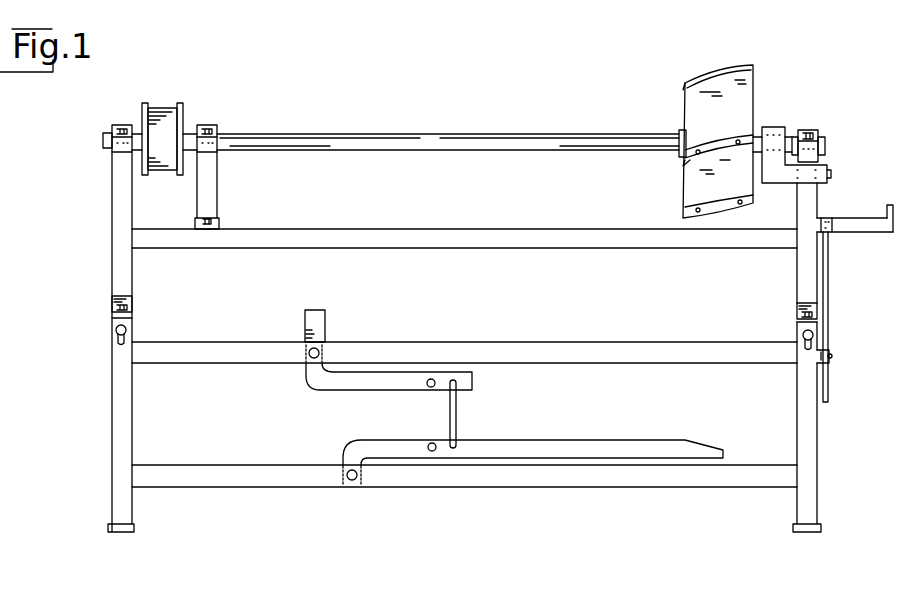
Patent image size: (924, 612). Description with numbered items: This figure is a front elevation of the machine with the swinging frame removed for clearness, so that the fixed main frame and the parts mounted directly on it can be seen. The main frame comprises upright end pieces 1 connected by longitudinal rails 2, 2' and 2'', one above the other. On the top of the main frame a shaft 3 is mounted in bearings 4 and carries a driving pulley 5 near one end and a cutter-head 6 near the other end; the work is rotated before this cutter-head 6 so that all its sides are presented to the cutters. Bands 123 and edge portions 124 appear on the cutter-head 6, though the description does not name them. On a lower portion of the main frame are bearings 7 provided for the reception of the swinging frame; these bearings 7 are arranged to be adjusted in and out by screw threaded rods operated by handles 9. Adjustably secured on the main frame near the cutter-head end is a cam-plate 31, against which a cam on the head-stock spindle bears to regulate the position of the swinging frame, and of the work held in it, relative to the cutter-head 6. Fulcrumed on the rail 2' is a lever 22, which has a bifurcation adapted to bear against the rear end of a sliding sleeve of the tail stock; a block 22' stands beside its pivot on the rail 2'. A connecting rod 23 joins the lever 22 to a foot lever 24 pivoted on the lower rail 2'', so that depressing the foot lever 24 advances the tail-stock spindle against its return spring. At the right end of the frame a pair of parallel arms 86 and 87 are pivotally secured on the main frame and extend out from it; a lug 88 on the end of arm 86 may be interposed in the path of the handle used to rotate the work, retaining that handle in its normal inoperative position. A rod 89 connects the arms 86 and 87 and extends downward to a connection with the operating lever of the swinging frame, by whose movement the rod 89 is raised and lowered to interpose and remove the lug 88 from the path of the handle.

The upright end pieces 1 is at (108, 222).
The longitudinal rail 2 is at (464, 221).
The longitudinal rail 2' is at (464, 334).
The longitudinal rail 2'' is at (464, 462).
The shaft 3 is at (338, 125).
The bearings 4 is at (114, 124).
The driving pulley 5 is at (153, 102).
The cutter-head 6 is at (676, 110).
The bearings 7 is at (112, 304).
The handles 9 is at (113, 334).
The lever 22 is at (389, 384).
The stop block 22' is at (295, 316).
The connecting rod 23 is at (465, 426).
The foot lever 24 is at (563, 440).
The cam-plate 31 is at (782, 127).
The arm 86 is at (857, 218).
The arm 87 is at (829, 353).
The lug 88 is at (895, 210).
The rod 89 is at (832, 298).
The band 123 is at (725, 135).
The drum edge 124 is at (683, 90).